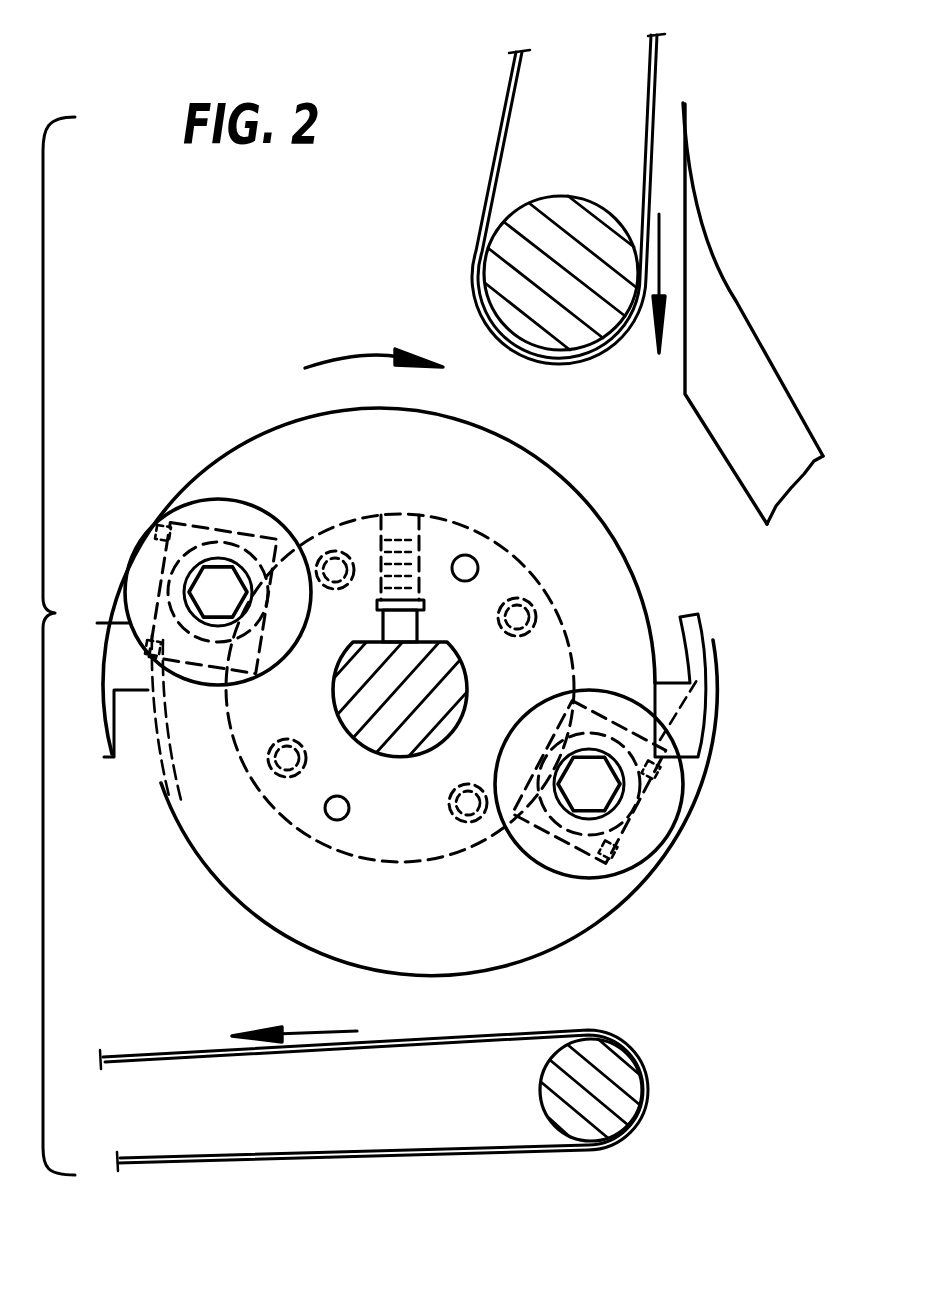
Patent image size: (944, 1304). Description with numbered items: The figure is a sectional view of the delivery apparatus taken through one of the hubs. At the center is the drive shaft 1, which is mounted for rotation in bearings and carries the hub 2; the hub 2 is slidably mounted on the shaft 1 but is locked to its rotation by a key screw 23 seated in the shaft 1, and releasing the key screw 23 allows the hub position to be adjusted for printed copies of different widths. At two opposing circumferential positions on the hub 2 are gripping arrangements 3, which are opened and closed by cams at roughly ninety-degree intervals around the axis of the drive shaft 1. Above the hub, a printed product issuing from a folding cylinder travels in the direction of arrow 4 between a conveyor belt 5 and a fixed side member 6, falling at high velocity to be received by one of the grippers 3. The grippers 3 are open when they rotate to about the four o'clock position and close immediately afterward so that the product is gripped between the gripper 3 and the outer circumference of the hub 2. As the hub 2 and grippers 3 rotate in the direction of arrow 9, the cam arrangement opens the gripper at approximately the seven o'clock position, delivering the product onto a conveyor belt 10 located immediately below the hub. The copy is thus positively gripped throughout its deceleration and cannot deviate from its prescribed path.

The drive shaft 1 is at (437, 688).
The hub 2 is at (265, 437).
The gripping arrangement 3 is at (147, 548).
The arrow 4 is at (659, 288).
The conveyor belt 5 is at (500, 149).
The fixed side member 6 is at (699, 240).
The arrow 9 is at (372, 357).
The conveyor belt 10 is at (553, 1037).
The key screw 23 is at (415, 562).